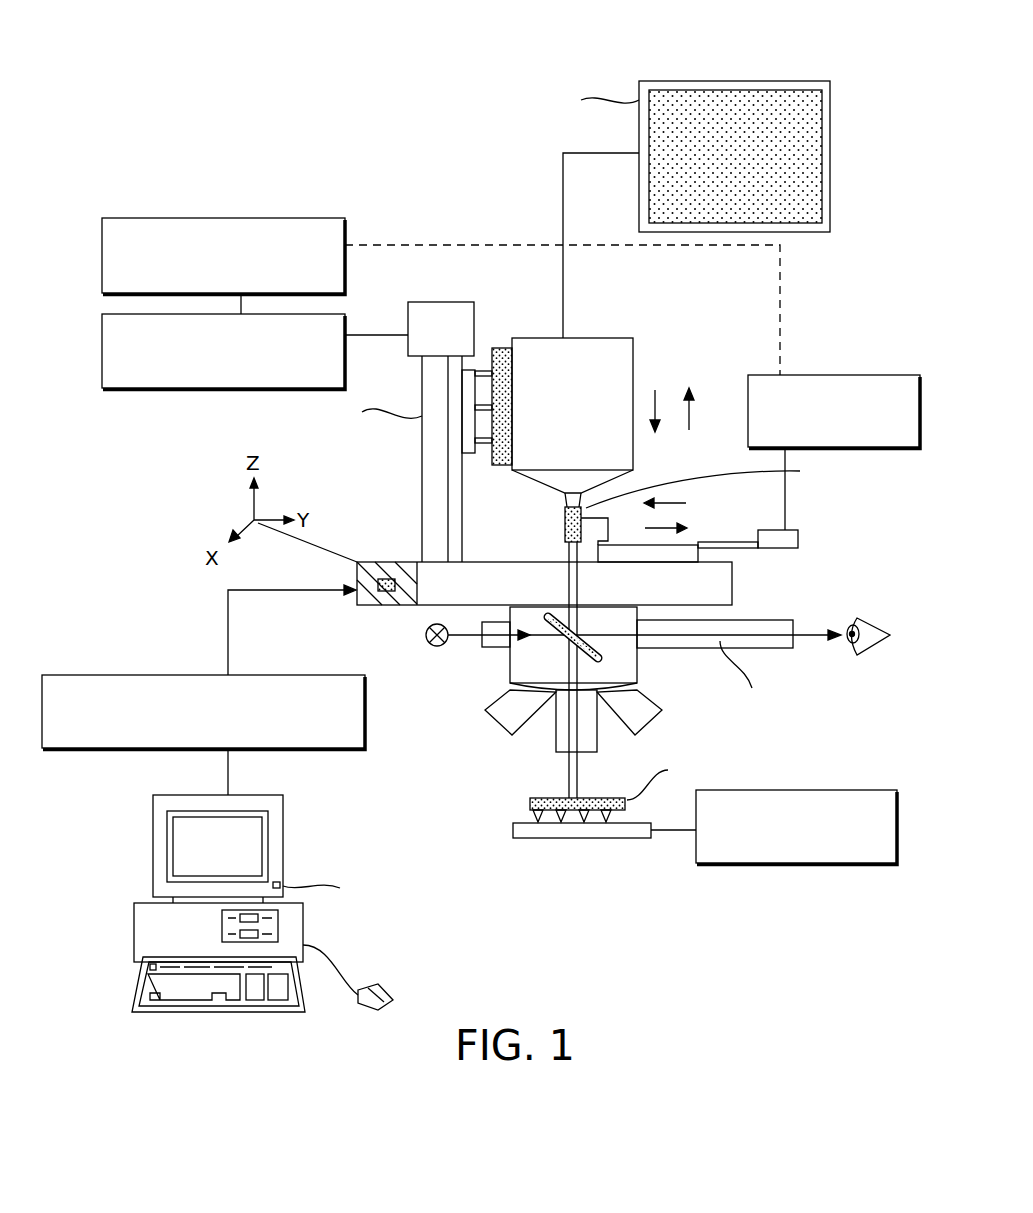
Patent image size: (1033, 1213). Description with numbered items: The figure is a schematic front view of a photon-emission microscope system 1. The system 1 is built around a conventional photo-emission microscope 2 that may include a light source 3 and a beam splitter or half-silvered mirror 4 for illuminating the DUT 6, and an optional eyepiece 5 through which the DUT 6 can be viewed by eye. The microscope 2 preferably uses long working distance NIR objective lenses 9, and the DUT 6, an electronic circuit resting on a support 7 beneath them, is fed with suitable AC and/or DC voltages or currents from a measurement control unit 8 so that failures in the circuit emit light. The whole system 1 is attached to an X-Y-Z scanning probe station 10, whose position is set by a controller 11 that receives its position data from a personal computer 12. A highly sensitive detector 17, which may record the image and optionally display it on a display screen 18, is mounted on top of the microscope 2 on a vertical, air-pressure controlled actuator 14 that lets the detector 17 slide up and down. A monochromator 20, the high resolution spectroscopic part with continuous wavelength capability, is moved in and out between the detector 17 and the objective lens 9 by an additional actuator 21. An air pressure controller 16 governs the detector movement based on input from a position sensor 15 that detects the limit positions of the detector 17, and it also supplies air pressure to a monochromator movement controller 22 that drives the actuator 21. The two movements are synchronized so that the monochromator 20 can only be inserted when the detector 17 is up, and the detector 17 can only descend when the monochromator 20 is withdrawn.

The microscope system 1 is at (328, 130).
The photo-emission microscope 2 is at (515, 647).
The light source 3 is at (430, 645).
The beam splitter 4 is at (599, 658).
The eyepiece 5 is at (780, 621).
The DUT 6 is at (528, 803).
The stage 7 is at (598, 840).
The measurement control unit 8 is at (803, 864).
The objective lens 9 is at (511, 736).
The X-Y-Z scanning probe station 10 is at (720, 577).
The controller 11 is at (118, 675).
The personal computer 12 is at (283, 810).
The air-pressure controlled actuator 14 is at (443, 302).
The position sensor 15 is at (126, 389).
The air pressure controller 16 is at (122, 218).
The detector 17 is at (539, 338).
The display screen 18 is at (800, 81).
The monochromator 20 is at (565, 520).
The actuator 21 is at (799, 540).
The monochromator movement controller 22 is at (843, 375).